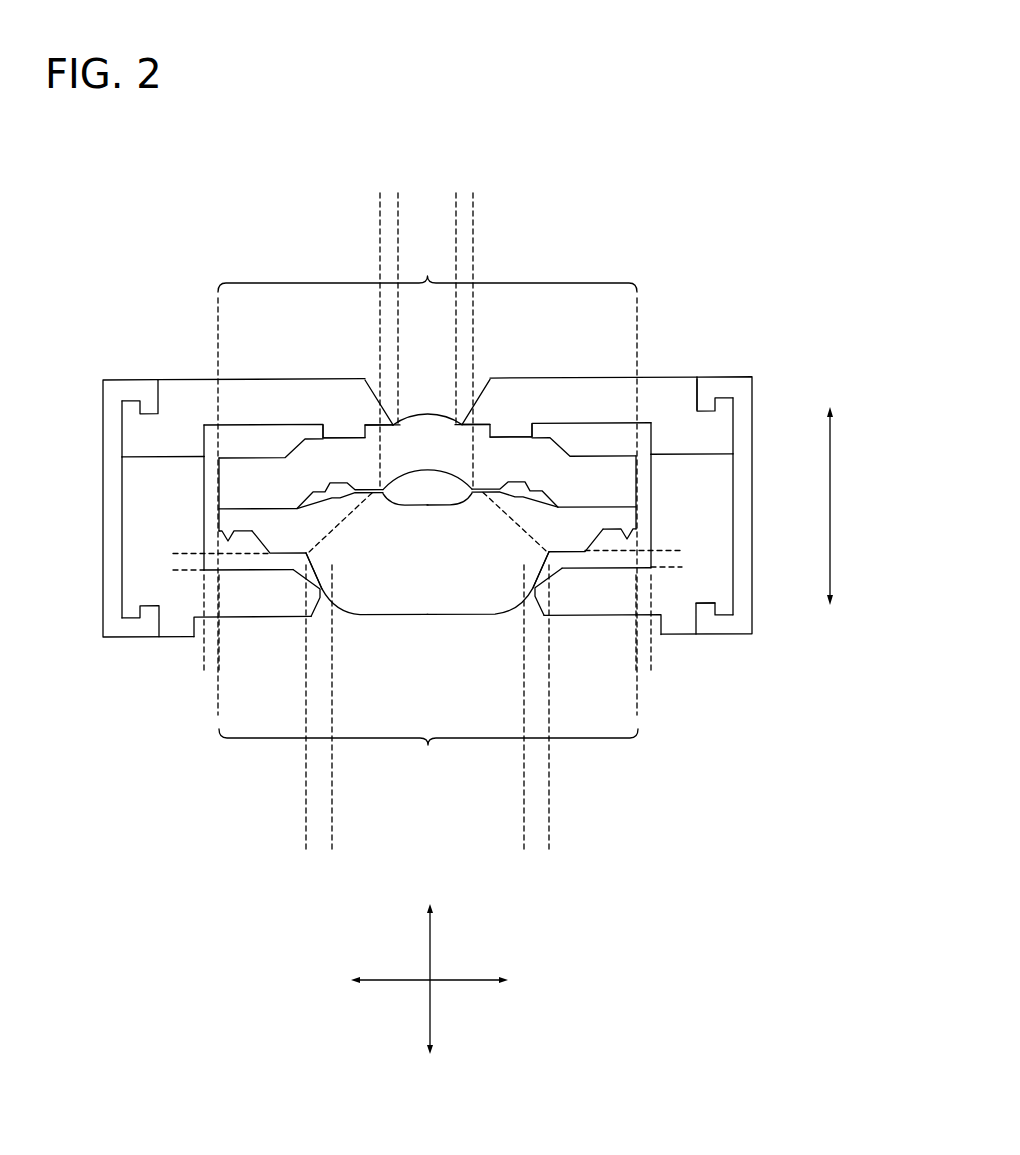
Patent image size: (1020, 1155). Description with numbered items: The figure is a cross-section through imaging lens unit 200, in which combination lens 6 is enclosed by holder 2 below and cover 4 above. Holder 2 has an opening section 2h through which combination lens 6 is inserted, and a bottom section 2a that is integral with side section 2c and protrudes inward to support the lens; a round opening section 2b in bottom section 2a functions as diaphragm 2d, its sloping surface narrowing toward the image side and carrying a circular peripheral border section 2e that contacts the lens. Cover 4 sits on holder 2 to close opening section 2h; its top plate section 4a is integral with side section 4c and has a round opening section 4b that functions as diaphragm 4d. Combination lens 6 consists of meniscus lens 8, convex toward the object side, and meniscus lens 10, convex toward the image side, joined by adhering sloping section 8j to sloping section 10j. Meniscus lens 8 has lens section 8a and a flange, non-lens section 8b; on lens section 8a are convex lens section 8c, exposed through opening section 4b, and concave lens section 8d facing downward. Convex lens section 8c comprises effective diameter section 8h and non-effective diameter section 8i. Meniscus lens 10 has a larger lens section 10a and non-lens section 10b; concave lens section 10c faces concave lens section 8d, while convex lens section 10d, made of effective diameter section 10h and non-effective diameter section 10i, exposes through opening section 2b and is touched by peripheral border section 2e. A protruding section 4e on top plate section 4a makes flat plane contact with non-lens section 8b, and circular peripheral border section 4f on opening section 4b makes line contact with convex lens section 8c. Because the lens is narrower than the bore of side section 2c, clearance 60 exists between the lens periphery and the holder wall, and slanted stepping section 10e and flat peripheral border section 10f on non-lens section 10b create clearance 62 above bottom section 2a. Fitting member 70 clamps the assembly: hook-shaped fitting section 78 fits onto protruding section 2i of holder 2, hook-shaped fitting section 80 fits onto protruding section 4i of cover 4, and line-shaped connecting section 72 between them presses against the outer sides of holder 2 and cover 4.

The imaging lens unit 200 is at (618, 172).
The holder 2 is at (767, 455).
The bottom section 2a is at (288, 604).
The opening section 2b is at (321, 598).
The side section 2c is at (728, 572).
The diaphragm 2d is at (427, 592).
The peripheral border section 2e is at (320, 589).
The opening section 2h is at (194, 491).
The protruding section 2i is at (726, 614).
The cover 4 is at (767, 377).
The top plate section 4a is at (256, 402).
The opening section 4b is at (385, 382).
The side section 4c is at (728, 440).
The diaphragm 4d is at (427, 402).
The protruding section 4e is at (340, 428).
The peripheral border section 4f is at (462, 427).
The protruding section 4i is at (723, 402).
The combination lens 6 is at (428, 512).
The meniscus lens 8 is at (427, 350).
The lens section 8a is at (388, 318).
The non-lens section 8b is at (372, 318).
The convex lens section 8c is at (424, 412).
The concave lens section 8d is at (416, 472).
The effective diameter section 8h is at (406, 233).
The non-effective diameter section 8i is at (380, 200).
The sloping section 8j is at (314, 486).
The meniscus lens 10 is at (426, 683).
The lens section 10a is at (314, 688).
The non-lens section 10b is at (227, 688).
The concave lens section 10c is at (442, 507).
The convex lens section 10d is at (437, 615).
The slanted stepping section 10e is at (262, 547).
The flat peripheral border section 10f is at (228, 540).
The effective diameter section 10h is at (516, 797).
The non-effective diameter section 10i is at (306, 832).
The sloping section 10j is at (299, 504).
The clearance 60 is at (248, 662).
The clearance 62 is at (181, 530).
The fitting member 70 is at (40, 605).
The connecting section 72 is at (112, 490).
The fitting section 78 is at (148, 611).
The fitting section 80 is at (146, 402).